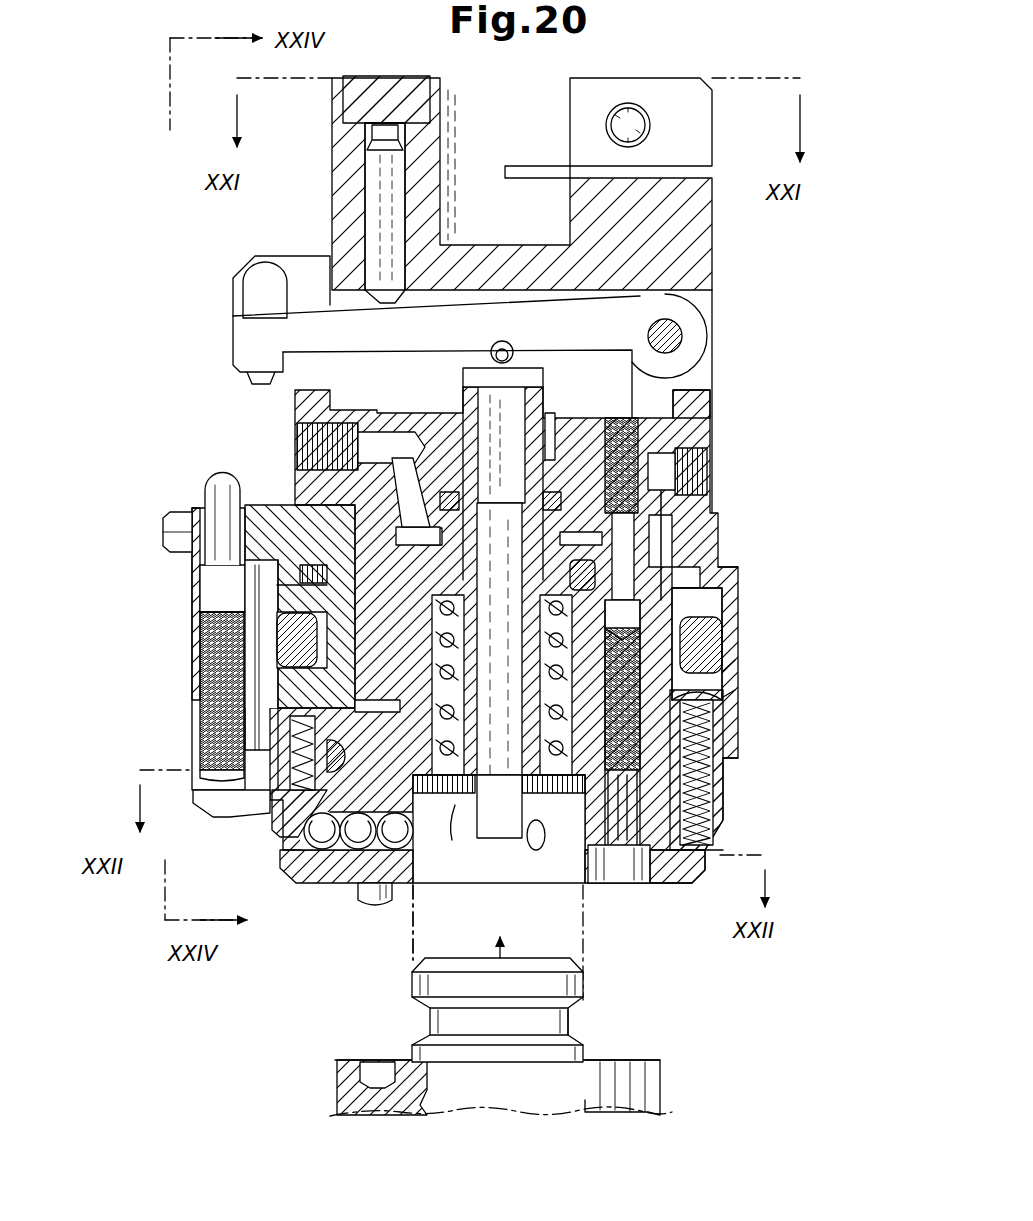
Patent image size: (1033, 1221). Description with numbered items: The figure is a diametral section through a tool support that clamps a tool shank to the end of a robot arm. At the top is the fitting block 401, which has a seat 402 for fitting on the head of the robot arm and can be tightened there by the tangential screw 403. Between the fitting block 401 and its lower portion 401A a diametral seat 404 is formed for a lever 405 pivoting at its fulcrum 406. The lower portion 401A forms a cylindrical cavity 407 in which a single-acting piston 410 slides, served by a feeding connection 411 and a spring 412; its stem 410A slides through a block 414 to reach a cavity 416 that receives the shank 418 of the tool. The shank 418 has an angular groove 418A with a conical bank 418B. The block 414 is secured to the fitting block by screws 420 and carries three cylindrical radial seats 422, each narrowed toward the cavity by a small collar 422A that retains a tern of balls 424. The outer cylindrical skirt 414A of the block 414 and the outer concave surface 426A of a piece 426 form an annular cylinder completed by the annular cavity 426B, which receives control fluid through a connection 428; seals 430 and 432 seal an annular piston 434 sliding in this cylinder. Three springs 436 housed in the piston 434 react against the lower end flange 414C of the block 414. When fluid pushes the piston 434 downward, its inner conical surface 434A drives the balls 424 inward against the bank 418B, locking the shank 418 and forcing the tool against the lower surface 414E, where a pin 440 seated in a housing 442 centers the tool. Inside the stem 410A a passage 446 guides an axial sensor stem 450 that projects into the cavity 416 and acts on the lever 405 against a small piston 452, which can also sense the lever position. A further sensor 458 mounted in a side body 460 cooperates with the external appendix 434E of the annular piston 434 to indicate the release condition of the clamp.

The fitting block 401 is at (712, 135).
The lower portion of the fitting block 401A is at (700, 430).
The seat 402 is at (572, 90).
The tangential screw 403 is at (640, 112).
The diametral seat 404 is at (700, 383).
The lever 405 is at (303, 322).
The fulcrum 406 is at (682, 330).
The cylindrical cavity 407 is at (660, 561).
The single-acting piston 410 is at (535, 565).
The piston stem 410A is at (500, 843).
The feeding connection 411 is at (290, 422).
The return spring 412 is at (368, 778).
The block 414 is at (592, 843).
The outer cylindrical skirt 414A is at (292, 695).
The lower end flange 414C is at (705, 865).
The lower surface 414E is at (670, 885).
The cavity 416 is at (550, 885).
The shank 418 is at (592, 1073).
The angular groove 418A is at (575, 1027).
The conical bank 418B is at (425, 1010).
The screws 420 is at (718, 825).
The cylindrical radial seats 422 is at (328, 887).
The small collar 422A is at (420, 922).
The balls 424 is at (300, 855).
The piece 426 is at (275, 480).
The outer concave surface 426A is at (270, 705).
The annular cavity 426B is at (700, 585).
The connection 428 is at (705, 467).
The seal 430 is at (296, 645).
The seal 432 is at (720, 800).
The annular piston 434 is at (215, 605).
The inner conical surface 434A is at (292, 831).
The external appendix 434E is at (240, 717).
The springs 436 is at (720, 770).
The pin 440 is at (375, 905).
The housing 442 is at (362, 1079).
The passage 446 is at (578, 570).
The axial sensor stem 450 is at (470, 885).
The small piston 452 is at (368, 172).
The sensor 458 is at (196, 721).
The side body 460 is at (200, 525).